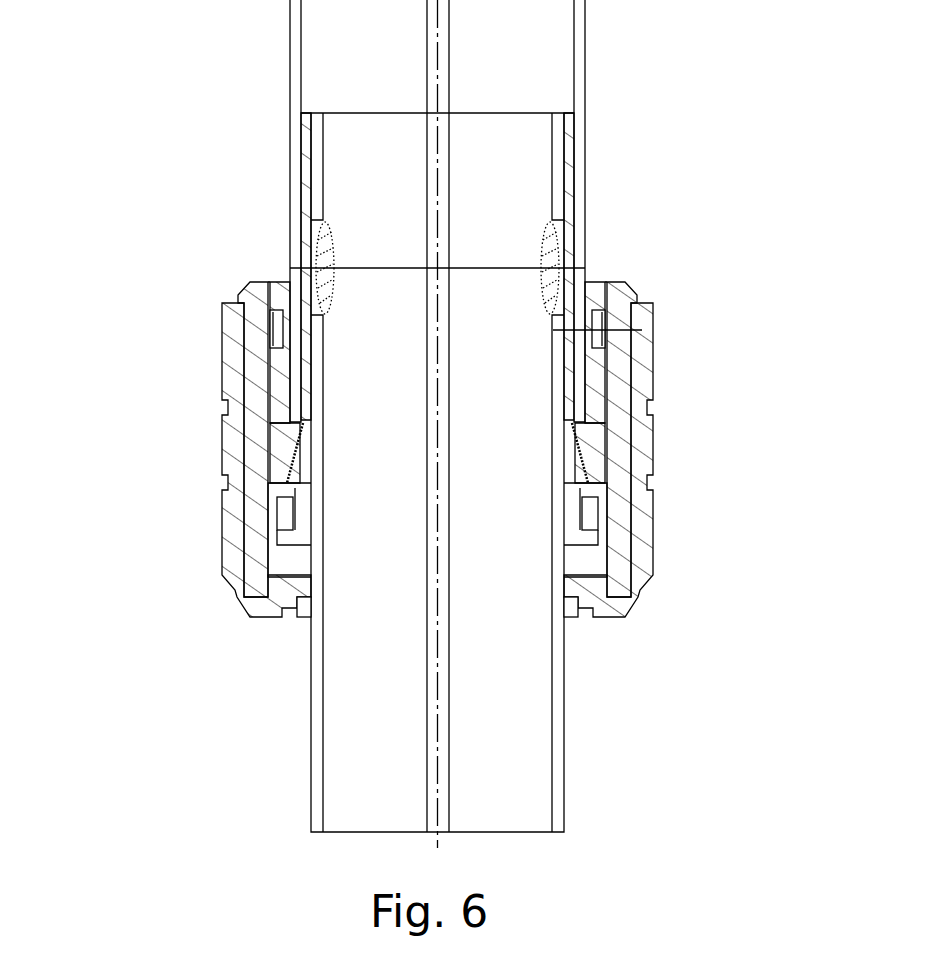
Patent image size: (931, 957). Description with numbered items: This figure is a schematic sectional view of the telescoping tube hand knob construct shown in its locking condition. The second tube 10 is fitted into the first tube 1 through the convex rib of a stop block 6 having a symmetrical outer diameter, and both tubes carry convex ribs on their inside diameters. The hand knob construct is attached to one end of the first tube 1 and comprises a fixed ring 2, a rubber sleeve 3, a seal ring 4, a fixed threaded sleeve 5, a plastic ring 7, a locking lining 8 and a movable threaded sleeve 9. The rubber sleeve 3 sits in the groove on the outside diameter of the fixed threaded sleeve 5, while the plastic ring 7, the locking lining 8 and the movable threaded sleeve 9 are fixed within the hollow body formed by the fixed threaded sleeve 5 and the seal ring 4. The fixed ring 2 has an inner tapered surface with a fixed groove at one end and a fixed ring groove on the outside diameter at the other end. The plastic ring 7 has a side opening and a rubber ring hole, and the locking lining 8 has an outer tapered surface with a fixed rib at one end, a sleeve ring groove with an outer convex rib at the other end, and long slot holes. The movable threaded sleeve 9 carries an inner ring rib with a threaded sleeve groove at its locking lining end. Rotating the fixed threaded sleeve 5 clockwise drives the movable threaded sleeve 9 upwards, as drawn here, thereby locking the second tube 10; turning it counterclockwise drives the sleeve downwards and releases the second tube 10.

The first tube 1 is at (292, 2).
The fixed ring 2 is at (610, 360).
The rubber sleeve 3 is at (232, 393).
The seal ring 4 is at (574, 603).
The fixed threaded sleeve 5 is at (615, 549).
The stop block 6 is at (575, 224).
The plastic ring 7 is at (276, 326).
The locking lining 8 is at (584, 450).
The movable threaded sleeve 9 is at (291, 524).
The second tube 10 is at (320, 738).